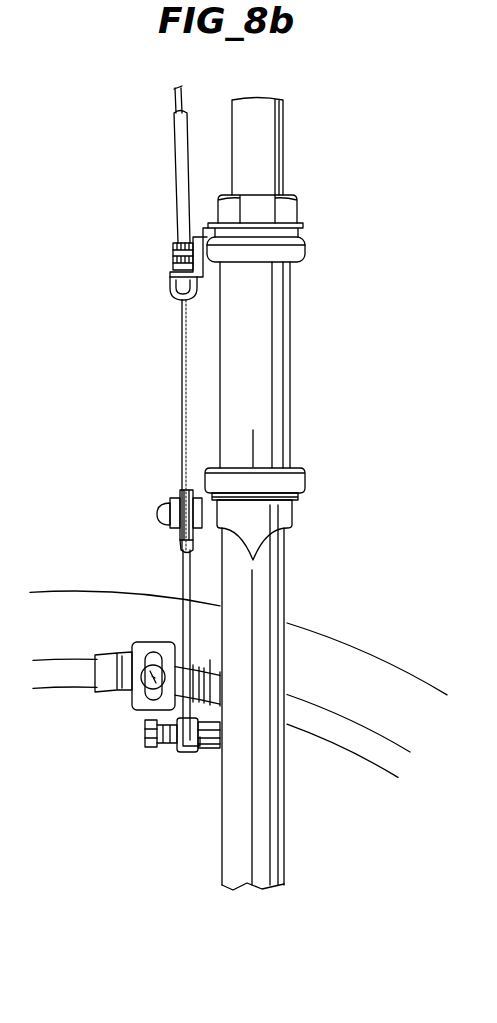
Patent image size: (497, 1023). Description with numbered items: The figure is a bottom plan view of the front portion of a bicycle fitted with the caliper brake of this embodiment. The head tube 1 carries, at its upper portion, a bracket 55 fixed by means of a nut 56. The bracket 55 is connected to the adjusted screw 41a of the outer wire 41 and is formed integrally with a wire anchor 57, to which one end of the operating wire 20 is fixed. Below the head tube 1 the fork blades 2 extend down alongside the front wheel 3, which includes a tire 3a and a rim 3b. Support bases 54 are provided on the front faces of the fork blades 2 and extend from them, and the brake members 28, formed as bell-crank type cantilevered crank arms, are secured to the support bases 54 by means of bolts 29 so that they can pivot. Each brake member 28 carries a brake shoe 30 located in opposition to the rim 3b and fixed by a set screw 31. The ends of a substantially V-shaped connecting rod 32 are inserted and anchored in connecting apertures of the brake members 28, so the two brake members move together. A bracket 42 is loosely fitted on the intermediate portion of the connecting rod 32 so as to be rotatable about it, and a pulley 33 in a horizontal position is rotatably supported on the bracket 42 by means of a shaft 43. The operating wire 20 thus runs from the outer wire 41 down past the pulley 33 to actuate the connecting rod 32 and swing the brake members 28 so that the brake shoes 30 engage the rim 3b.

The head tube 1 is at (282, 340).
The fork blades 2 is at (290, 570).
The front wheel 3 is at (238, 704).
The tire 3a is at (412, 680).
The rim 3b is at (353, 748).
The operating wire 20 is at (180, 378).
The brake members 28 is at (180, 752).
The bolts 29 is at (145, 742).
The brake shoes 30 is at (92, 670).
The set screws 31 is at (145, 682).
The connecting rod 32 is at (182, 582).
The pulley 33 is at (183, 493).
The outer wire 41 is at (173, 155).
The adjusted screw 41a is at (170, 263).
The bracket 42 is at (178, 545).
The shaft 43 is at (157, 505).
The support bases 54 is at (200, 750).
The bracket 55 is at (193, 221).
The nut 56 is at (297, 209).
The wire anchor 57 is at (170, 293).